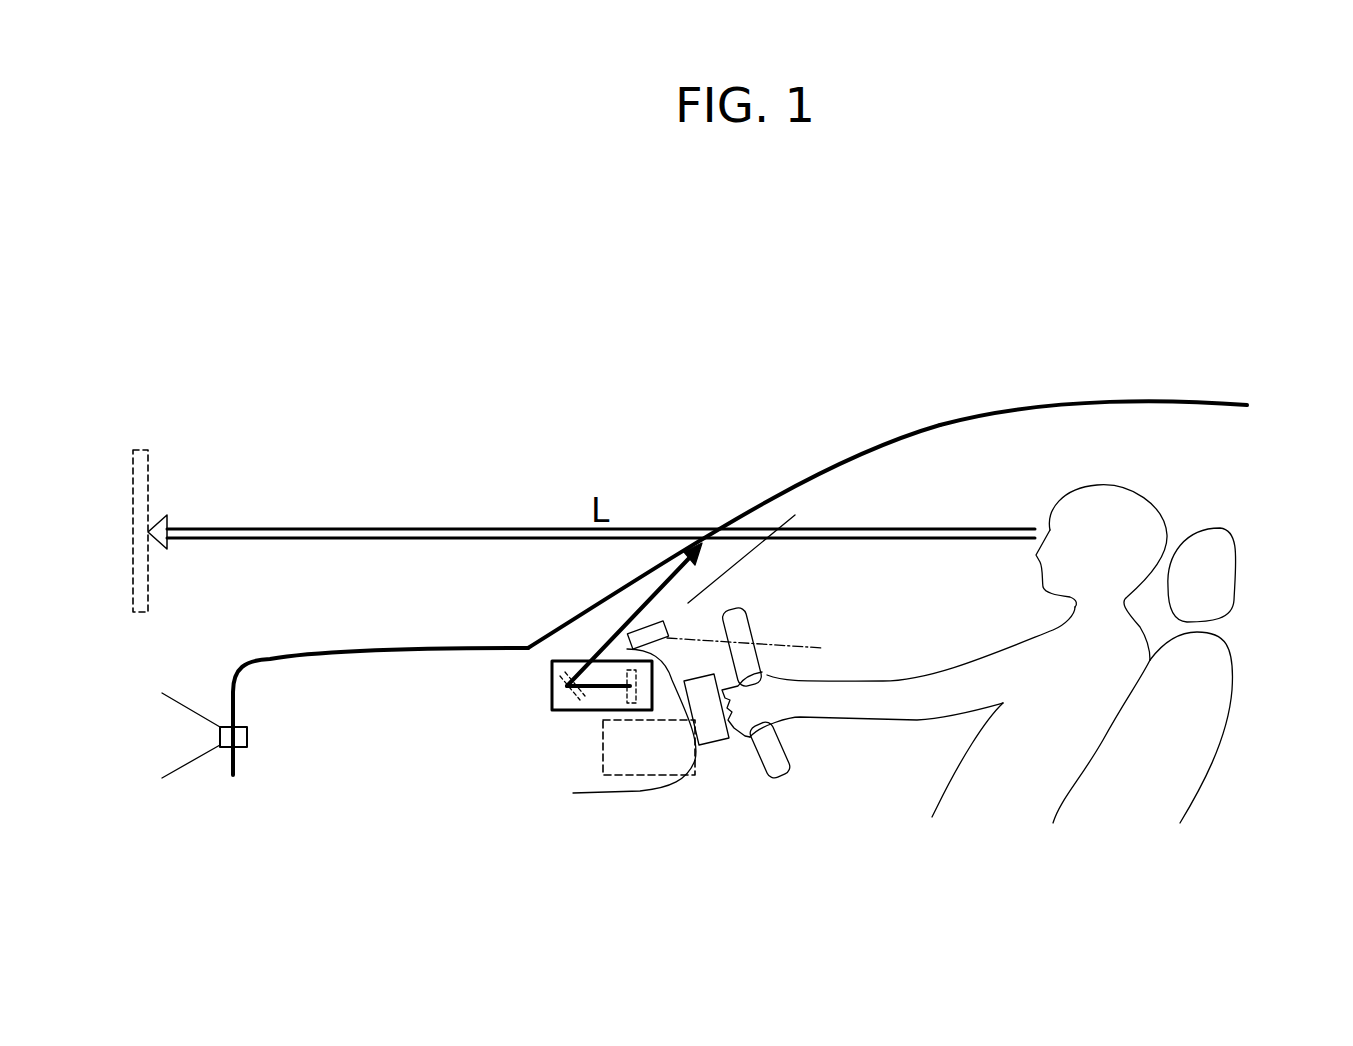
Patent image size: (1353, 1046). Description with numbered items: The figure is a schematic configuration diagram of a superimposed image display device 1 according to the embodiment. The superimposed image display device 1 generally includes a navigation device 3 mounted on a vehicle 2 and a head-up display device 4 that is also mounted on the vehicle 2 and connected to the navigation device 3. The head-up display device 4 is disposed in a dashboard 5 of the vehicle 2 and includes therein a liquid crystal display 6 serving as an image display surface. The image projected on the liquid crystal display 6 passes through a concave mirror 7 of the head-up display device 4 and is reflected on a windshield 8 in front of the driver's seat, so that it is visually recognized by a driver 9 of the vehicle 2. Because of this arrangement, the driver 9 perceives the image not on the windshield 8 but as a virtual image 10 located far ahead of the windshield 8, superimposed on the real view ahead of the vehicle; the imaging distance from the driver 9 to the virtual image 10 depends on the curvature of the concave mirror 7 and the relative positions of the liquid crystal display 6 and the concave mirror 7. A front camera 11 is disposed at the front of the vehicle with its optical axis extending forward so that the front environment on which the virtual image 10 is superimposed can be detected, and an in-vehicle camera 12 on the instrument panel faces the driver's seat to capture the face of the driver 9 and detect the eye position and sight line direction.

The superimposed image display device 1 is at (615, 395).
The vehicle 2 is at (1097, 402).
The navigation device 3 is at (670, 757).
The head-up display device 4 is at (548, 692).
The dashboard 5 is at (663, 673).
The liquid crystal display 6 is at (633, 776).
The concave mirror 7 is at (566, 712).
The windshield 8 is at (757, 510).
The driver 9 is at (1133, 503).
The virtual image 10 is at (141, 450).
The front camera 11 is at (228, 748).
The in-vehicle camera 12 is at (642, 628).